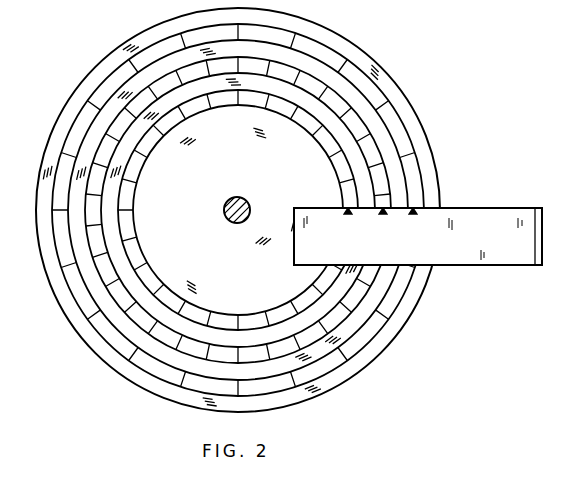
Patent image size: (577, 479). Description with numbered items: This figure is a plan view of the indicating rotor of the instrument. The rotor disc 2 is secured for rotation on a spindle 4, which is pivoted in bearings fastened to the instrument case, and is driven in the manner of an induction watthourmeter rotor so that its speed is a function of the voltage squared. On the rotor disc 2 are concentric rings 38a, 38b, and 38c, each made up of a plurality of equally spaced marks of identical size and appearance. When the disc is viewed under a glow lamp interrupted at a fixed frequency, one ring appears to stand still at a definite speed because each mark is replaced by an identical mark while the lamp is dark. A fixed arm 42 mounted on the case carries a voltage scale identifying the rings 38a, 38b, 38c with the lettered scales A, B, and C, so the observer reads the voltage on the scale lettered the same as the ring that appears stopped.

The rotor disc 2 is at (407, 102).
The spindle 4 is at (250, 208).
The ring 38a is at (123, 200).
The ring 38b is at (92, 243).
The ring 38c is at (63, 255).
The fixed arm 42 is at (505, 208).